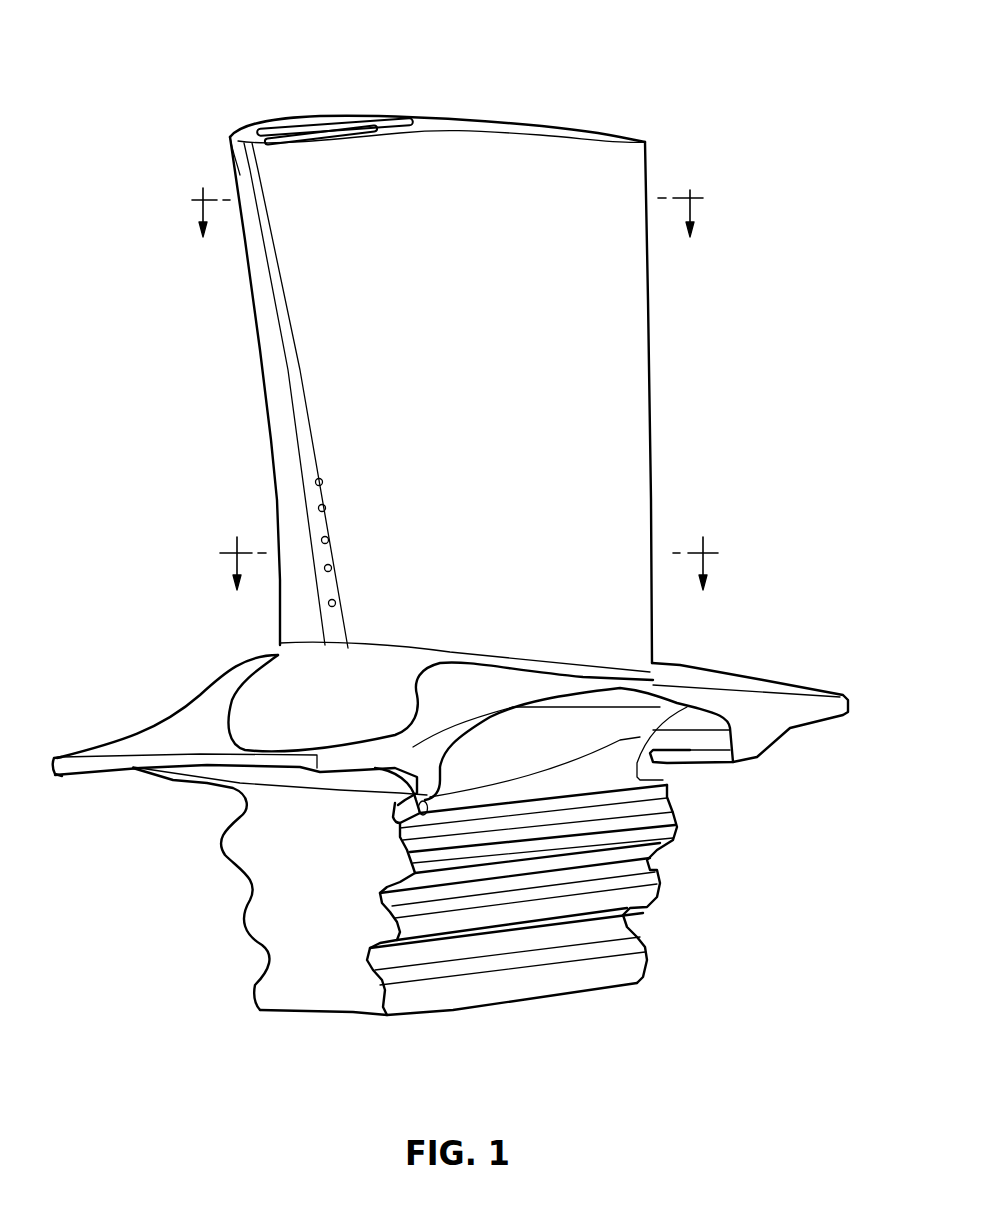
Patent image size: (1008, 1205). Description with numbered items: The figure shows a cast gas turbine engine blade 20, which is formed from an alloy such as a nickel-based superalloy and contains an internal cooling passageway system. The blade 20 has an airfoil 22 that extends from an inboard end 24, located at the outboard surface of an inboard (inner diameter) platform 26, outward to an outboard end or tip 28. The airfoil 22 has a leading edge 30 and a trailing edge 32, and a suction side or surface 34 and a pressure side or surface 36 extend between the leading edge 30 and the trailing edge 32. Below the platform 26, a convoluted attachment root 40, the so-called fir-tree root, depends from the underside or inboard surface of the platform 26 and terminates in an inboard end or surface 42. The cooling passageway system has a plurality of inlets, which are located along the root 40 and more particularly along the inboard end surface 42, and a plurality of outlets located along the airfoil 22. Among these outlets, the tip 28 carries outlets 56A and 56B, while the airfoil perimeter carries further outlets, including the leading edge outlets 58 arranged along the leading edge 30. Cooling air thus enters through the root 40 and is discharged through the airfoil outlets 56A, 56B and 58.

The gas turbine engine blade 20 is at (172, 336).
The airfoil 22 is at (340, 372).
The inboard end 24 is at (500, 634).
The inboard platform 26 is at (512, 677).
The tip 28 is at (450, 122).
The leading edge 30 is at (313, 440).
The trailing edge 32 is at (650, 371).
The suction side 34 is at (290, 488).
The pressure side 36 is at (473, 541).
The attachment root 40 is at (283, 907).
The inboard end surface of root 42 is at (500, 1010).
The tip outlet 56A is at (303, 128).
The tip outlet 56B is at (358, 136).
The leading edge outlets 58 is at (323, 482).